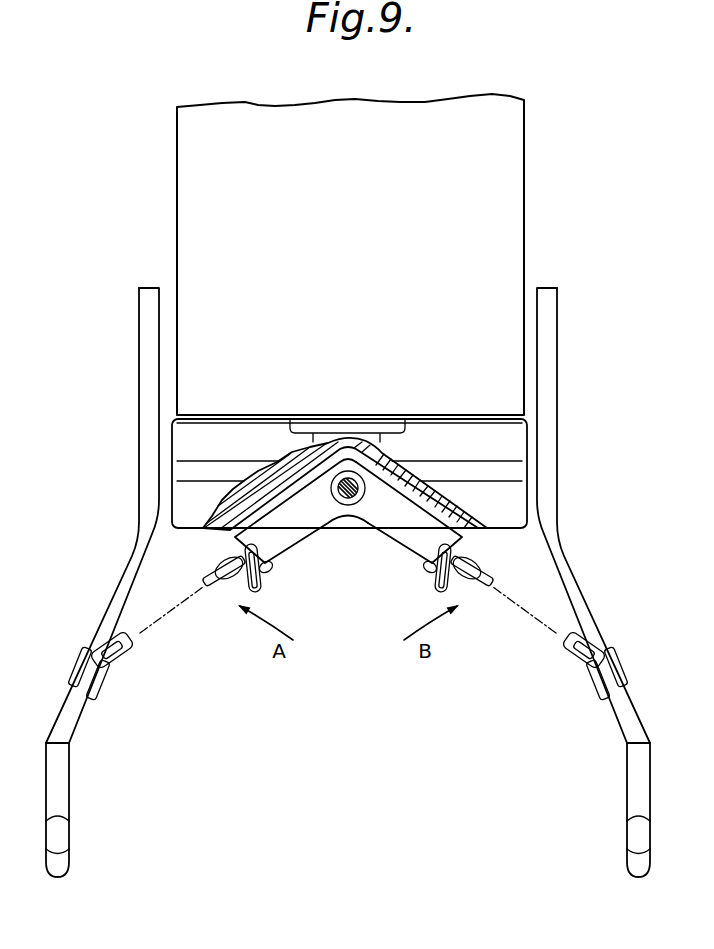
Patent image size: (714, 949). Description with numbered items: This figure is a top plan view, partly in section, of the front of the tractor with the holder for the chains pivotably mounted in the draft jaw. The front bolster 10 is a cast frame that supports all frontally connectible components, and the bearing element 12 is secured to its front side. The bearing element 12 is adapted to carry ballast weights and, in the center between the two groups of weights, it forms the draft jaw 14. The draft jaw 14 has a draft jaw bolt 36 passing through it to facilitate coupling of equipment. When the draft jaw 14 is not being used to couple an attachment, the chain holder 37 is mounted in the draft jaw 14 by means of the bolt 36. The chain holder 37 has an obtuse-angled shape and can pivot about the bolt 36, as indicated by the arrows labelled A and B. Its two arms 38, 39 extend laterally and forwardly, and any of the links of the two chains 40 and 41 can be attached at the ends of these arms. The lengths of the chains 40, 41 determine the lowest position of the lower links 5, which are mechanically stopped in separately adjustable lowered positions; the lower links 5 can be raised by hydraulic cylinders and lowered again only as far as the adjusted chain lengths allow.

The lower links 5 is at (65, 732).
The front bolster 10 is at (497, 258).
The bearing element 12 is at (457, 495).
The draft jaw 14 is at (457, 527).
The draft jaw bolt 36 is at (338, 497).
The chain holder 37 is at (348, 522).
The arm 38 is at (403, 539).
The arm 39 is at (268, 539).
The chain 40 is at (581, 665).
The chain 41 is at (123, 660).